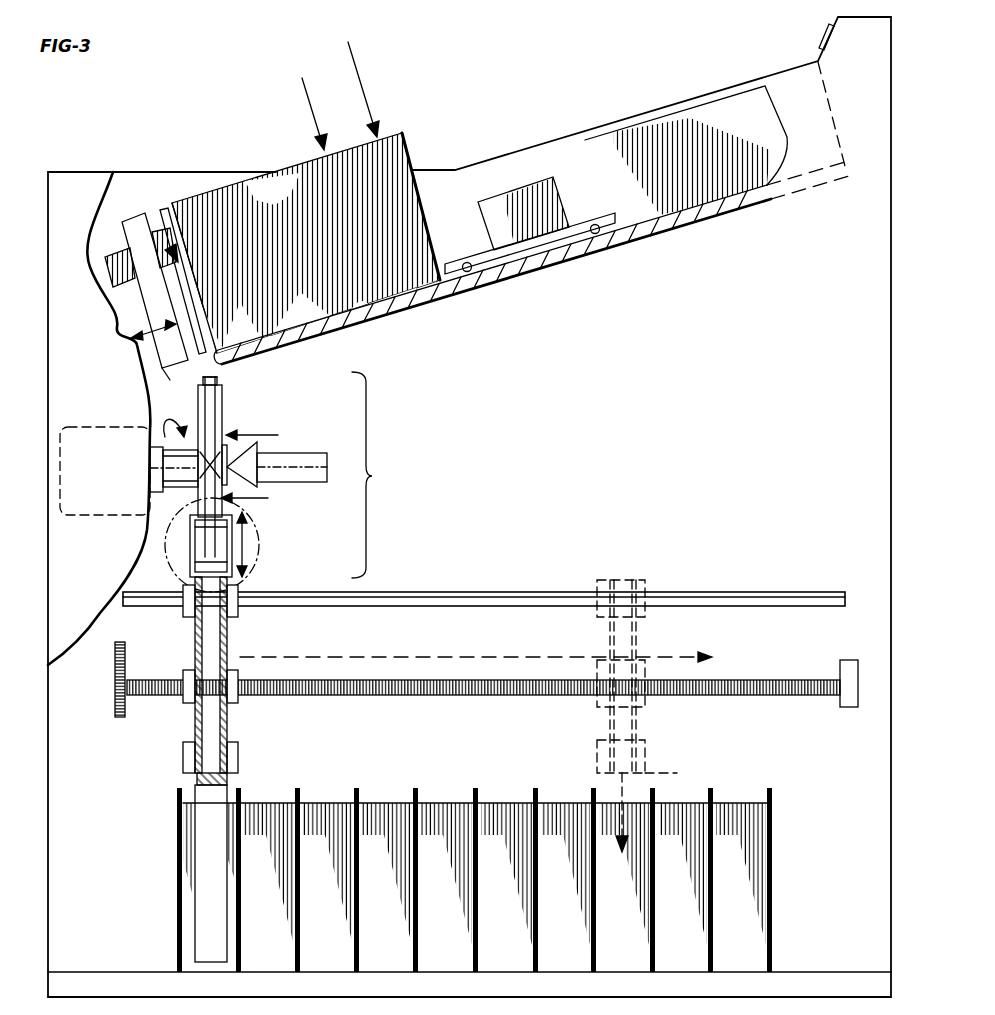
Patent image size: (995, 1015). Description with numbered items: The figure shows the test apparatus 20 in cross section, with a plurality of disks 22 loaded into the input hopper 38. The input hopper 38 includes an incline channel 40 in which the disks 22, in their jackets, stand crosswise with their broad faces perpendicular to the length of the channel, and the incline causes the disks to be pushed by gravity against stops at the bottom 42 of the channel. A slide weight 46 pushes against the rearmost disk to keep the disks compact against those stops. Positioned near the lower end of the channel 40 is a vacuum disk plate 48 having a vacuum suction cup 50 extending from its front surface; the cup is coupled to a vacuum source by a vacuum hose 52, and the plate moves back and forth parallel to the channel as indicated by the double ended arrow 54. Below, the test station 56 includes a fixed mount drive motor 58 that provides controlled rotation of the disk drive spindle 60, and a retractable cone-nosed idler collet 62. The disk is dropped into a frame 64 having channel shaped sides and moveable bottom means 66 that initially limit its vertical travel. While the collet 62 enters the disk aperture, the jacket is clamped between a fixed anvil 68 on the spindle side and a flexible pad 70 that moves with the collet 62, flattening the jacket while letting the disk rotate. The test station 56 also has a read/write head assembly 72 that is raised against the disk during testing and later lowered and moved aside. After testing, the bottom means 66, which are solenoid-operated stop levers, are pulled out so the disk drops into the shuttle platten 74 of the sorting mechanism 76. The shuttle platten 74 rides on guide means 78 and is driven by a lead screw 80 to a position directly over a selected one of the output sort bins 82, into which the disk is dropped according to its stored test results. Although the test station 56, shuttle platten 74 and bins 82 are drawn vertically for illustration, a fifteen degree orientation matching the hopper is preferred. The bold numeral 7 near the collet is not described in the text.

The test apparatus 20 is at (916, 333).
The disks 22 is at (162, 225).
The input hopper 38 is at (643, 95).
The incline channel 40 is at (713, 93).
The bottom of the channel 42 is at (232, 368).
The slide weight 46 is at (535, 183).
The vacuum disk plate 48 is at (135, 338).
The vacuum suction cup 50 is at (158, 238).
The vacuum hose 52 is at (130, 288).
The double ended arrow 54 is at (150, 345).
The test station 56 is at (375, 475).
The fixed mount drive motor 58 is at (112, 517).
The disk drive spindle 60 is at (150, 470).
The retractable cone-nosed idler collet 62 is at (312, 453).
The frame 64 is at (223, 390).
The moveable bottom means 66 is at (233, 571).
The fixed anvil 68 is at (196, 403).
The flexible pad 70 is at (223, 420).
The read/write head assembly 72 is at (190, 548).
The shuttle platten 74 is at (228, 628).
The sorting mechanism 76 is at (549, 570).
The guide means 78 is at (715, 592).
The lead screw 80 is at (745, 680).
The output sort bins 82 is at (300, 802).
The section view indicator 7 is at (255, 520).